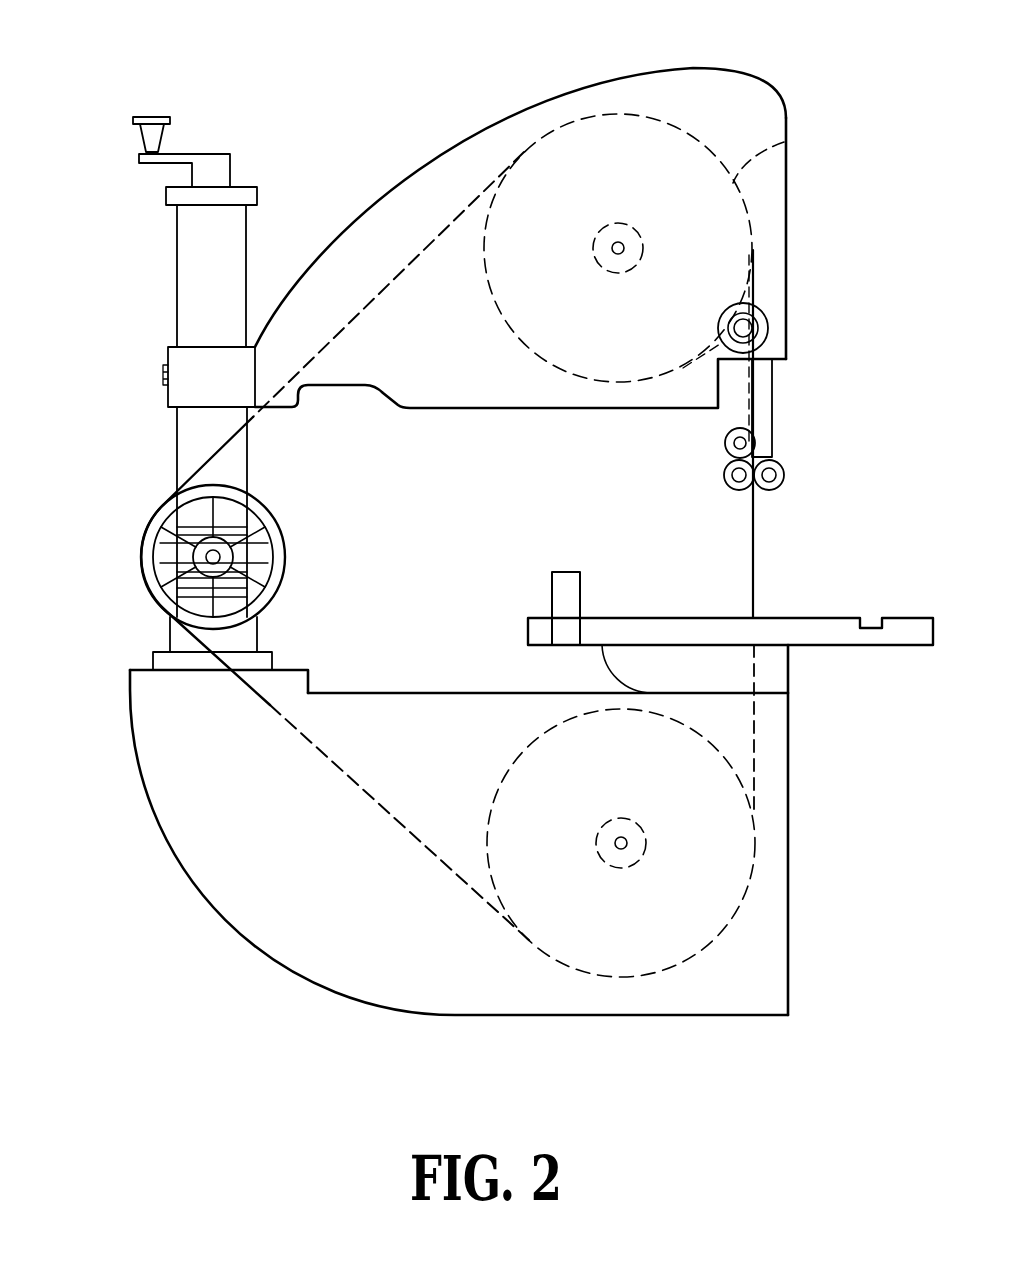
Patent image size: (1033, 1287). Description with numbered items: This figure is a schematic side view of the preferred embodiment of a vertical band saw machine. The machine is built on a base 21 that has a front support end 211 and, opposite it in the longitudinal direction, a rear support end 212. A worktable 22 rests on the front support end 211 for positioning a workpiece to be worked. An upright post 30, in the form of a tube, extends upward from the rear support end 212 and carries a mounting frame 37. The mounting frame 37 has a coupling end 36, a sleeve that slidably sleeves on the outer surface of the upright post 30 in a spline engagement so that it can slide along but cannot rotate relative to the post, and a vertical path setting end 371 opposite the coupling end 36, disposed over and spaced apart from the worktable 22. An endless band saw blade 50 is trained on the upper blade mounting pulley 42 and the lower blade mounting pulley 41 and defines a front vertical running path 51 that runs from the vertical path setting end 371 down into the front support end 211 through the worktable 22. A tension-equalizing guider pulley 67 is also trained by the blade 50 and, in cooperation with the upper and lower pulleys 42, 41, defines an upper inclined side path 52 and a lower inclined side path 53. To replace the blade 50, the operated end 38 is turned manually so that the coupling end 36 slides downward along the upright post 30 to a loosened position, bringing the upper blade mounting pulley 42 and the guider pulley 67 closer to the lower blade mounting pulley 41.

The base 21 is at (258, 887).
The front support end 211 is at (770, 700).
The rear support end 212 is at (182, 680).
The worktable 22 is at (925, 615).
The upright post 30 is at (176, 258).
The coupling end 36 is at (168, 356).
The mounting frame 37 is at (396, 192).
The vertical path setting end 371 is at (770, 255).
The operated end 38 is at (142, 138).
The lower blade mounting pulley 41 is at (650, 940).
The upper blade mounting pulley 42 is at (790, 140).
The endless band saw blade 50 is at (757, 535).
The front vertical running path 51 is at (770, 580).
The upper inclined side path 52 is at (373, 297).
The lower inclined side path 53 is at (372, 797).
The tension-equalizing guider pulley 67 is at (146, 566).